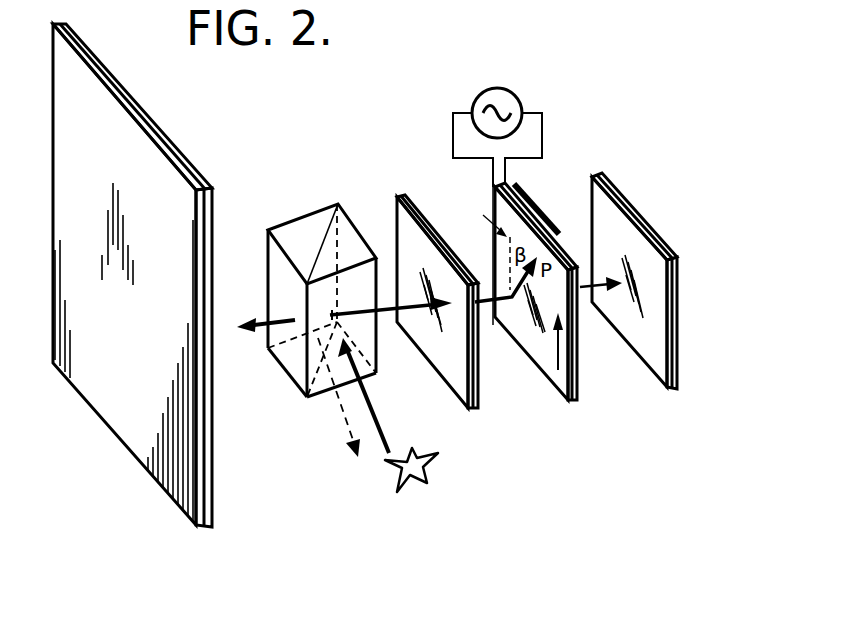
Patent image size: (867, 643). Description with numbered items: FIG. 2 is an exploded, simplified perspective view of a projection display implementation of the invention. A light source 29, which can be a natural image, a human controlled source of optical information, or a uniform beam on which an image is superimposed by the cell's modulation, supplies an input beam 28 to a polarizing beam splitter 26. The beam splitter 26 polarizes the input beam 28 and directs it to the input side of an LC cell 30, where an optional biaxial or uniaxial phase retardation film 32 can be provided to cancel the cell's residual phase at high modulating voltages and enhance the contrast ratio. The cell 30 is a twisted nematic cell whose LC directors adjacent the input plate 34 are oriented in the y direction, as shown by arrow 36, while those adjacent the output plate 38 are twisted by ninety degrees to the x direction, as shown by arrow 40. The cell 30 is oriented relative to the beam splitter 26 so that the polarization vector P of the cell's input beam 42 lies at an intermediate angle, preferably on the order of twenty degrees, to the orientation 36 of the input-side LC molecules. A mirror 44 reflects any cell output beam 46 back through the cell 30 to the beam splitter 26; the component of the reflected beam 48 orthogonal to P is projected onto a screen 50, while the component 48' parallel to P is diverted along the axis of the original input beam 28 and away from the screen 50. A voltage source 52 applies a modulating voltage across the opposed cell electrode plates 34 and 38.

The screen 50 is at (205, 183).
The polarizing beam splitter 26 is at (297, 218).
The reflected beam 48 is at (263, 302).
The component parallel to P 48' is at (323, 397).
The input beam 28 is at (362, 388).
The light source 29 is at (395, 470).
The phase retardation film 32 is at (397, 200).
The cell's input beam 42 is at (487, 303).
The voltage source 52 is at (480, 90).
The input plate 34 is at (538, 333).
The output plate 38 is at (562, 245).
The arrow 40 is at (520, 187).
The arrow 36 is at (562, 352).
The LC cell 30 is at (566, 418).
The mirror 44 is at (657, 240).
The cell output beam 46 is at (597, 297).